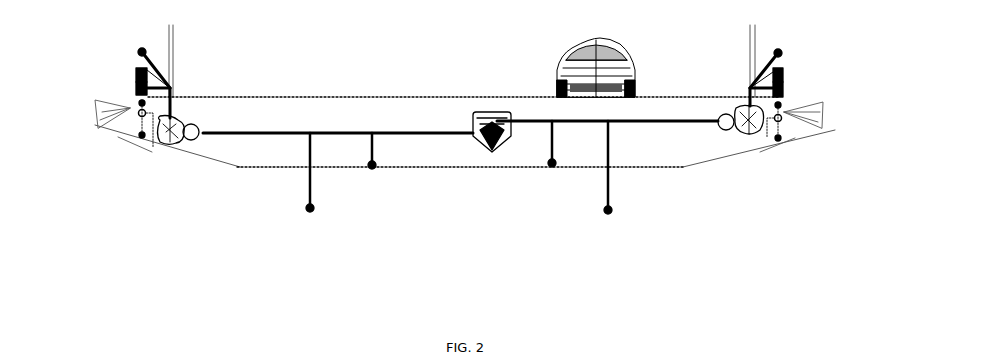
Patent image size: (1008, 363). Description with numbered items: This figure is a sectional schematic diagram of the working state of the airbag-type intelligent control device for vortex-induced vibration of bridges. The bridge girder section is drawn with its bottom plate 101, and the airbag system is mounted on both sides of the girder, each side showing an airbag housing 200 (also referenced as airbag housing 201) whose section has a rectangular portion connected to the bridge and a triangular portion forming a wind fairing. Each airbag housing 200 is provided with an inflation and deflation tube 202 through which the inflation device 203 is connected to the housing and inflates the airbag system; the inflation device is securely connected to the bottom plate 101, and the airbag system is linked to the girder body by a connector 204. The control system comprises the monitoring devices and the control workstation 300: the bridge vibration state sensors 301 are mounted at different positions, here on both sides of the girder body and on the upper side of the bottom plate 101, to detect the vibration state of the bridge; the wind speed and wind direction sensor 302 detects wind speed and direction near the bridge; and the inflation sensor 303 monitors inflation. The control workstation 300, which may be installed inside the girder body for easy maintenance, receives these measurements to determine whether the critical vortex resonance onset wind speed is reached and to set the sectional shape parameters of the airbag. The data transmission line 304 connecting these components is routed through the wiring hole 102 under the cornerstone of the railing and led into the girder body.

The bottom plate 101 is at (450, 170).
The wiring hole 102 is at (420, 95).
The airbag housing 200 is at (110, 127).
The airbag housing 201 is at (120, 140).
The inflation and deflation tube 202 is at (185, 142).
The inflation device 203 is at (138, 103).
The connector 204 is at (145, 140).
The control workstation 300 is at (492, 153).
The bridge vibration state sensor 301 is at (139, 50).
The wind speed and wind direction sensor 302 is at (136, 72).
The inflation sensor 303 is at (136, 88).
The data transmission line 304 is at (670, 120).